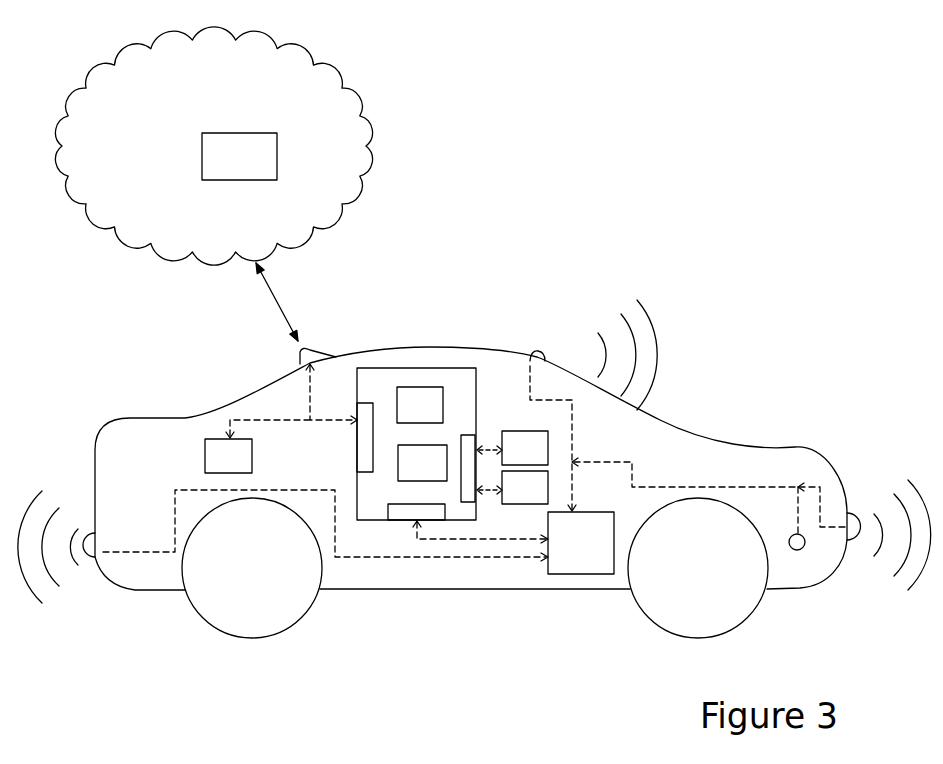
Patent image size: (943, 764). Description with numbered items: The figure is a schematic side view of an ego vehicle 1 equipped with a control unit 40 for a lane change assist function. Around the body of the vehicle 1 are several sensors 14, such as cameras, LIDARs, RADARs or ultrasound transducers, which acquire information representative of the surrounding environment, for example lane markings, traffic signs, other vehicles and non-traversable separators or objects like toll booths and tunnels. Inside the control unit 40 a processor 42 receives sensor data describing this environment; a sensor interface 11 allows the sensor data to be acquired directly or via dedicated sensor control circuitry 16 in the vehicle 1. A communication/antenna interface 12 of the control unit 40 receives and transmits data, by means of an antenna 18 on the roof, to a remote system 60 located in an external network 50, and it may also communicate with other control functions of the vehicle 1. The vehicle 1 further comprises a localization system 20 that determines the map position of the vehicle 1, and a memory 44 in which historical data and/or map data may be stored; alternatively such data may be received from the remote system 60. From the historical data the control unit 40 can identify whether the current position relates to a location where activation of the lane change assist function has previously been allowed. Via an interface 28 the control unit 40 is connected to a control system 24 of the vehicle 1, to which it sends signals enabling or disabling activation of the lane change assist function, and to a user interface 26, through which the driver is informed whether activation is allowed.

The ego vehicle 1 is at (116, 583).
The sensor interface 11 is at (405, 512).
The communication/antenna interface 12 is at (358, 437).
The sensors 14 is at (537, 357).
The sensor control circuitry 16 is at (596, 566).
The antenna 18 is at (306, 345).
The localization system 20 is at (205, 450).
The control system 24 is at (538, 498).
The user interface 26 is at (536, 447).
The interface 28 is at (475, 435).
The control unit 40 is at (397, 368).
The processor 42 is at (414, 387).
The memory 44 is at (437, 445).
The external network 50 is at (334, 63).
The remote system 60 is at (202, 146).